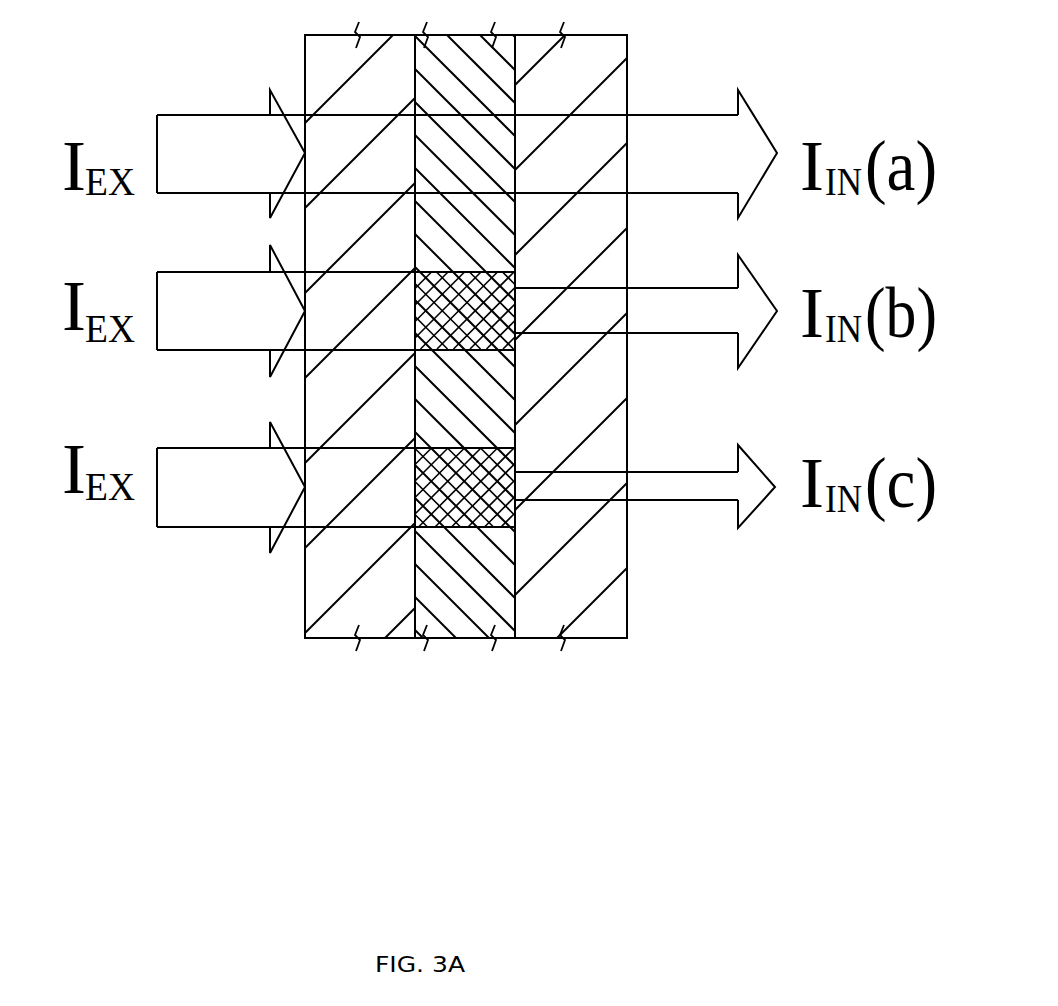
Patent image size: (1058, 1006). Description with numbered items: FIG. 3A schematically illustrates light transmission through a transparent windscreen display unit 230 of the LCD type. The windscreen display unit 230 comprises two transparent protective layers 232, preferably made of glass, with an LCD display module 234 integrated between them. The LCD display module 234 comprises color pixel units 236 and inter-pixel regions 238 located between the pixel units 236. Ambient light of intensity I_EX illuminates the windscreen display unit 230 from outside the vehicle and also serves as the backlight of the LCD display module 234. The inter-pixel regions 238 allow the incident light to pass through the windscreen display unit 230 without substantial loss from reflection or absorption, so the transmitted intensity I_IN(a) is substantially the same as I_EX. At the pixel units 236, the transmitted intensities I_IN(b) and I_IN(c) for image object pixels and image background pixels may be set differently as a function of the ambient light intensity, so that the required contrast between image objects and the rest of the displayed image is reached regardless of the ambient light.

The windscreen display unit 230 is at (672, 632).
The transparent protective layers 232 is at (380, 640).
The LCD display module 234 is at (477, 640).
The color pixel units 236 is at (440, 507).
The inter-pixel regions 238 is at (445, 583).